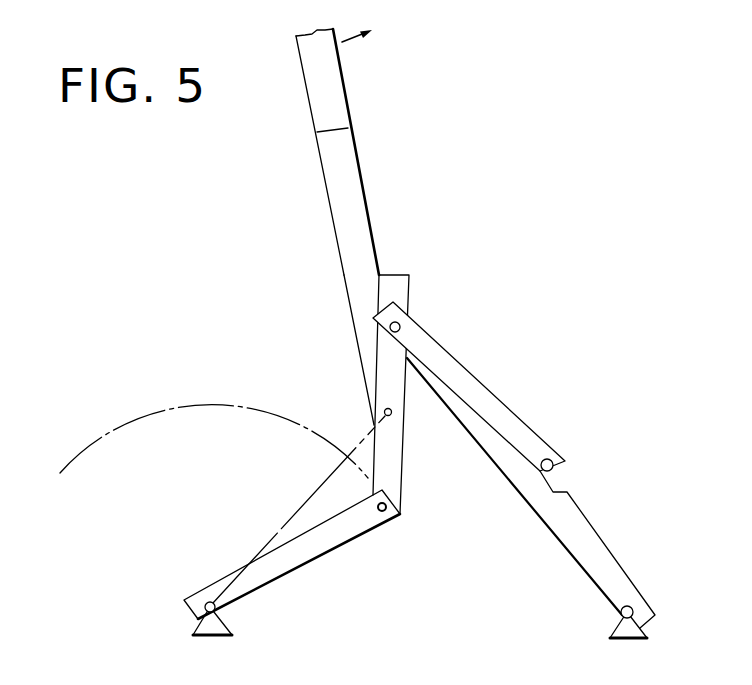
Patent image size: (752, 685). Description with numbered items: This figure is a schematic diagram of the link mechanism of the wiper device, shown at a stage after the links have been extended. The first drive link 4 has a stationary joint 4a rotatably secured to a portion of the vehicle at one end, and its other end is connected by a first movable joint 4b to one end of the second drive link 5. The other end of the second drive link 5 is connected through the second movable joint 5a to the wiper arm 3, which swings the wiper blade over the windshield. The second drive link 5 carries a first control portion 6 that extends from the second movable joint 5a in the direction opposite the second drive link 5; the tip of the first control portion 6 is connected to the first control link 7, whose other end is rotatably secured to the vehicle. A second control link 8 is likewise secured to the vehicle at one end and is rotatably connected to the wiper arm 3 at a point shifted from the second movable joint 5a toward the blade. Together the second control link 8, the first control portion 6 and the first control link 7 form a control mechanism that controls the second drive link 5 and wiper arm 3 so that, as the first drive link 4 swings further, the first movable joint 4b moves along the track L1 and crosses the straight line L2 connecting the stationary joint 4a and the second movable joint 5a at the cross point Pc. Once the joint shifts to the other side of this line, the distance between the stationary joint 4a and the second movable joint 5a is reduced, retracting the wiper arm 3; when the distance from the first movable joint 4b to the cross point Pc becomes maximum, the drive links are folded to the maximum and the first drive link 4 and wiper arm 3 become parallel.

The wiper arm 3 is at (360, 180).
The first control portion 6 is at (388, 372).
The second drive link 5 is at (397, 448).
The second movable joint 5a is at (393, 414).
The first drive link 4 is at (327, 545).
The stationary joint 4a is at (217, 606).
The first movable joint 4b is at (382, 512).
The first control link 7 is at (570, 532).
The second control link 8 is at (480, 384).
The track L1 is at (233, 405).
The straight line L2 is at (300, 504).
The cross point Pc is at (348, 457).